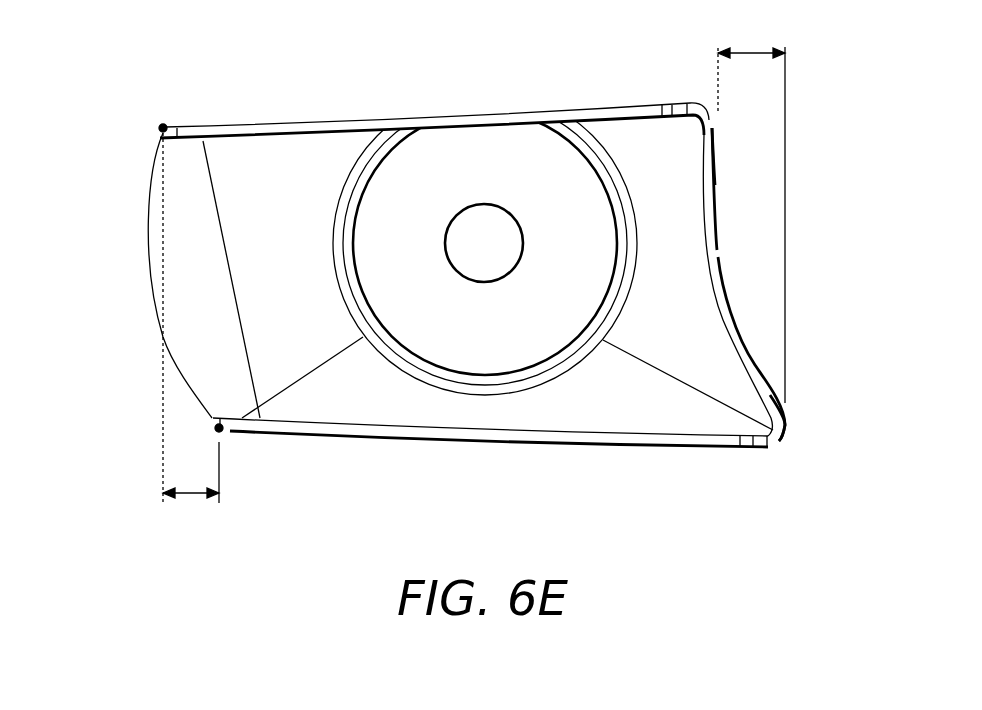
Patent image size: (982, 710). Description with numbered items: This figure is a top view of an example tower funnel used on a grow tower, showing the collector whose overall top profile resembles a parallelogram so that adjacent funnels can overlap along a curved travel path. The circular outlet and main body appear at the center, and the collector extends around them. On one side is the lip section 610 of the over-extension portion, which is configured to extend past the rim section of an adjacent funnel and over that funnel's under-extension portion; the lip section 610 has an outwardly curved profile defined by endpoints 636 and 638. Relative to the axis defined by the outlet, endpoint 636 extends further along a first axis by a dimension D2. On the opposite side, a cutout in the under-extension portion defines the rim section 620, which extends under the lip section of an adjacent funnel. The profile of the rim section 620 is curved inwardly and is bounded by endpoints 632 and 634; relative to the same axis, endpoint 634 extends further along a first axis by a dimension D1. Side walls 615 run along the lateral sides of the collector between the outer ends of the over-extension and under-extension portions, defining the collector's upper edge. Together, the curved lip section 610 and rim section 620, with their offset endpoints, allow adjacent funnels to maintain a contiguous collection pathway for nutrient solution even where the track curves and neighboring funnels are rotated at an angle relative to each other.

The lip section 610 is at (147, 228).
The side walls 615 is at (455, 117).
The rim section 620 is at (712, 250).
The endpoint 632 is at (712, 127).
The endpoint 634 is at (776, 438).
The endpoint 636 is at (163, 124).
The endpoint 638 is at (222, 432).
The dimension D1 is at (752, 52).
The dimension D2 is at (192, 497).